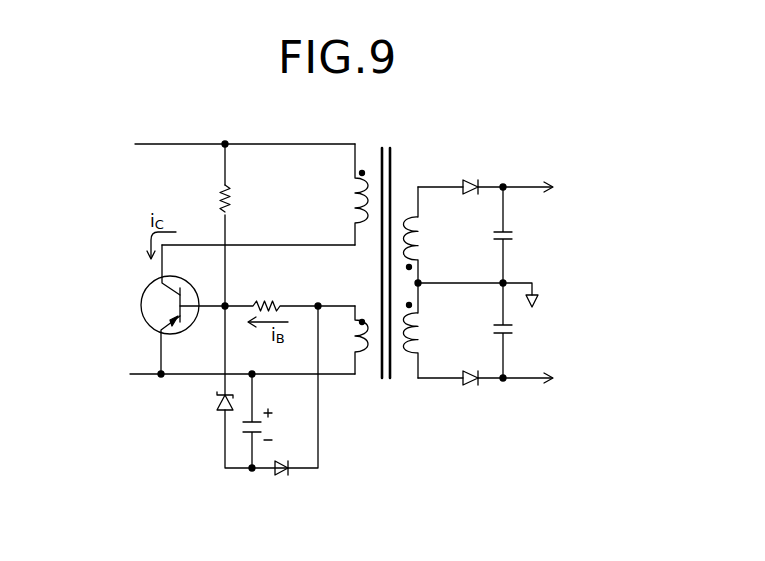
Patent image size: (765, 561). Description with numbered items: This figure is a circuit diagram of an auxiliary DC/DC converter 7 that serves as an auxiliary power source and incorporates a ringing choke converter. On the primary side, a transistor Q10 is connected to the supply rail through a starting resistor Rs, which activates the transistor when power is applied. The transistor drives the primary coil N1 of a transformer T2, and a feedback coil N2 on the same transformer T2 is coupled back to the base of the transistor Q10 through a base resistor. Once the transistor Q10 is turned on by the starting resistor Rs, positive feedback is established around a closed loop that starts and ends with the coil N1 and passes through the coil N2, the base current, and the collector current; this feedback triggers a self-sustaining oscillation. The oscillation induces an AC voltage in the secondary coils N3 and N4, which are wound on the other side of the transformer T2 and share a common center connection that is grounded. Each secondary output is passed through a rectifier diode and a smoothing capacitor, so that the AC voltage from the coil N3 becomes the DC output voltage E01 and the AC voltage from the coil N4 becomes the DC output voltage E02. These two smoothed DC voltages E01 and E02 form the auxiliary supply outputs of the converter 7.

The auxiliary DC/DC converter 7 is at (386, 320).
The transistor Q10 is at (153, 309).
The starting resistor Rs is at (236, 199).
The transformer T2 is at (384, 251).
The coil N1 is at (343, 194).
The coil N2 is at (345, 340).
The coil N3 is at (428, 235).
The coil N4 is at (428, 330).
The DC voltage E01 is at (542, 217).
The DC voltage E02 is at (542, 356).